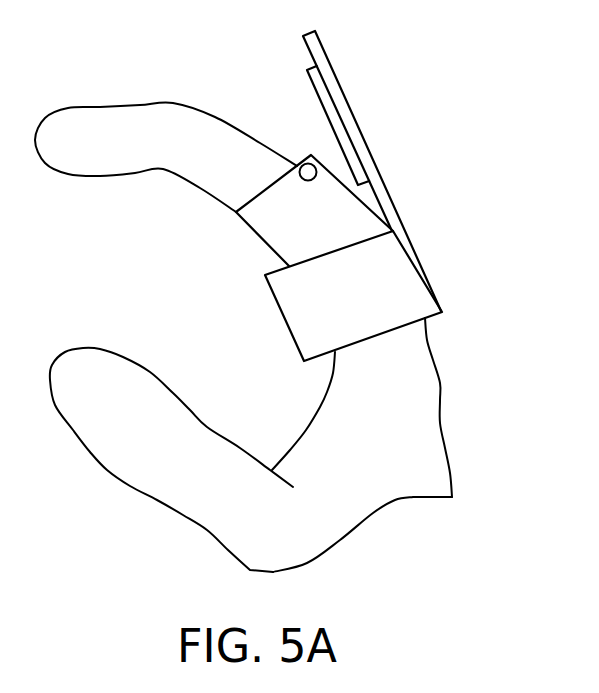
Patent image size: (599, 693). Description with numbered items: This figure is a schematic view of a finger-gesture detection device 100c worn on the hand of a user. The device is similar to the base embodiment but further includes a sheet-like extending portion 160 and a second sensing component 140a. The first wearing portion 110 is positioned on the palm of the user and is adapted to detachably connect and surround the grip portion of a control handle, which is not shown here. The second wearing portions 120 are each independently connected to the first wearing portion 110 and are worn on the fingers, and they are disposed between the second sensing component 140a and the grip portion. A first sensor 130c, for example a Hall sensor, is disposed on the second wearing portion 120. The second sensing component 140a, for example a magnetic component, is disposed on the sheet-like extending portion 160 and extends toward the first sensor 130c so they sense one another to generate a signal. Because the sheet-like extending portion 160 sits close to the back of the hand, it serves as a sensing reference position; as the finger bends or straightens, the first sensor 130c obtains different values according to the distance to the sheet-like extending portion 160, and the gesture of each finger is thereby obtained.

The finger-gesture detection device 100c is at (435, 202).
The first wearing portion 110 is at (383, 281).
The second wearing portion 120 is at (262, 225).
The first sensor 130c is at (313, 170).
The second sensing component 140a is at (313, 75).
The sheet-like extending portion 160 is at (317, 53).